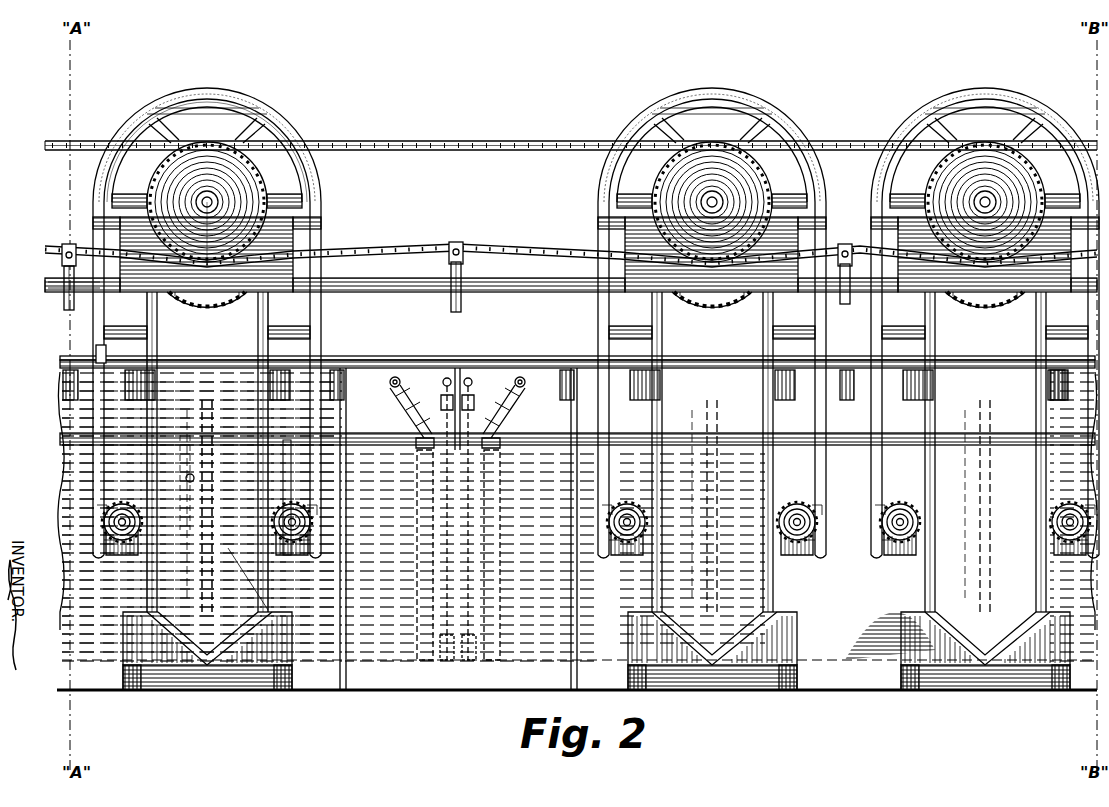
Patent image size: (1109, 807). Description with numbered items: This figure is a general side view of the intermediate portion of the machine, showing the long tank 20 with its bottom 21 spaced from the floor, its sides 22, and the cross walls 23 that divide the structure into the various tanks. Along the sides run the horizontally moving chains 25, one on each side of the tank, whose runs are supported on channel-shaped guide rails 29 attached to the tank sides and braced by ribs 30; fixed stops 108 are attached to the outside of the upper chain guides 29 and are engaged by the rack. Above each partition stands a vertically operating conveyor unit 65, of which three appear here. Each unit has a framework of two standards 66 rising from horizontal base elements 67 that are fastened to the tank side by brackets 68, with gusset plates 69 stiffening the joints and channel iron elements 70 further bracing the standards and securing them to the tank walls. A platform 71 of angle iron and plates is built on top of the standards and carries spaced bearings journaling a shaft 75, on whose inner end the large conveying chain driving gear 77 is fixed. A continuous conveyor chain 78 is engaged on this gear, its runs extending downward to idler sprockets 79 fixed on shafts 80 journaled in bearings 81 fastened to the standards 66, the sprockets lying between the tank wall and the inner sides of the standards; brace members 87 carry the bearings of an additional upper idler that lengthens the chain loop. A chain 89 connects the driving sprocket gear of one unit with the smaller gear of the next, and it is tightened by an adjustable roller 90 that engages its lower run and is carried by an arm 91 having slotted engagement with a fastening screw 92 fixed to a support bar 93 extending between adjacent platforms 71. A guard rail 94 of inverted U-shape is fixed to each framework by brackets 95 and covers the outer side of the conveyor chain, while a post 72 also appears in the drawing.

The tank 20 is at (497, 684).
The bottom 21 is at (425, 660).
The sides 22 is at (378, 670).
The cross walls 23 is at (212, 425).
The horizontally moving chains 25 is at (440, 360).
The channel-shaped guide rails 29 is at (420, 368).
The ribs 30 is at (470, 372).
The vertically operating conveyor unit 65 is at (312, 128).
The standards 66 is at (150, 316).
The horizontal base elements 67 is at (232, 680).
The brackets 68 is at (132, 680).
The gusset plates 69 is at (178, 648).
The channel iron elements 70 is at (174, 520).
The platform 71 is at (240, 300).
The post 72 is at (292, 445).
The shaft 75 is at (207, 220).
The conveying chain driving gear 77 is at (229, 116).
The conveyor chain 78 is at (268, 612).
The idler sprockets 79 is at (104, 522).
The shafts 80 is at (114, 526).
The bearings 81 is at (116, 532).
The brace members 87 is at (232, 368).
The chain 89 is at (110, 141).
The adjustable roller 90 is at (62, 258).
The arm 91 is at (64, 276).
The fastening screw 92 is at (64, 292).
The support bar 93 is at (100, 300).
The guard rail 94 is at (172, 112).
The brackets 95 is at (300, 330).
The fixed stops 108 is at (95, 352).